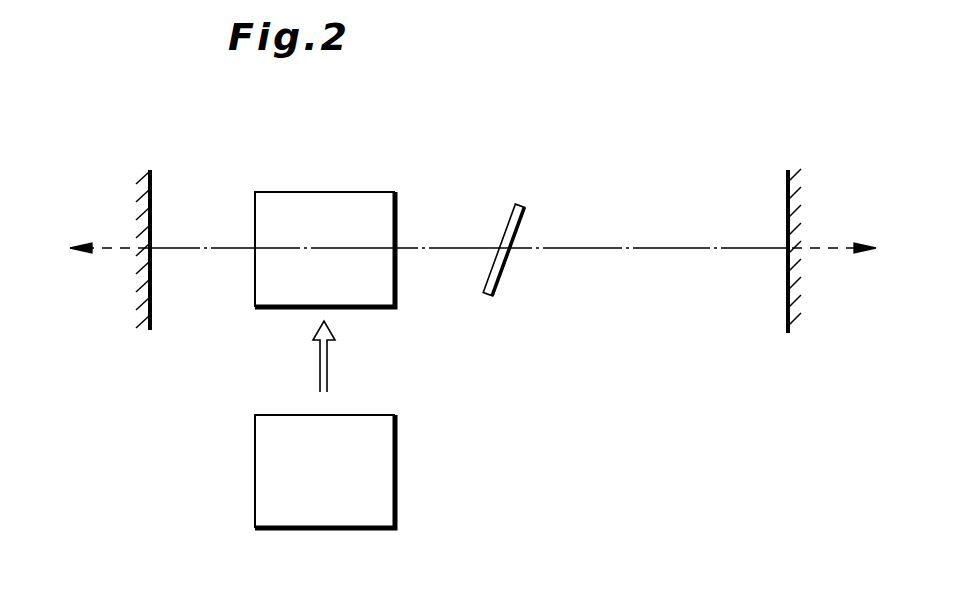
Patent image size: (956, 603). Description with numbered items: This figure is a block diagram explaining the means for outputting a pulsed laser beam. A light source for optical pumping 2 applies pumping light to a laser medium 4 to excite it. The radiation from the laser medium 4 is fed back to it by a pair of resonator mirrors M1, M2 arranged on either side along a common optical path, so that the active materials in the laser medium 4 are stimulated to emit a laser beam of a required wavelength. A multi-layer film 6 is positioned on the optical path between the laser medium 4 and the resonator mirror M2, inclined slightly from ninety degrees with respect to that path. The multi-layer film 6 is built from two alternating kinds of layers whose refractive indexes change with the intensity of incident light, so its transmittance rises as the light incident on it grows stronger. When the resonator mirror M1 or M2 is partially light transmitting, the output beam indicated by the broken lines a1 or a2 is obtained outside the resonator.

The light source for optical pumping 2 is at (397, 492).
The laser medium 4 is at (328, 192).
The multi-layer film 6 is at (519, 204).
The resonator mirror M1 is at (147, 169).
The resonator mirror M2 is at (790, 169).
The output beam a1 is at (103, 235).
The output beam a2 is at (834, 237).